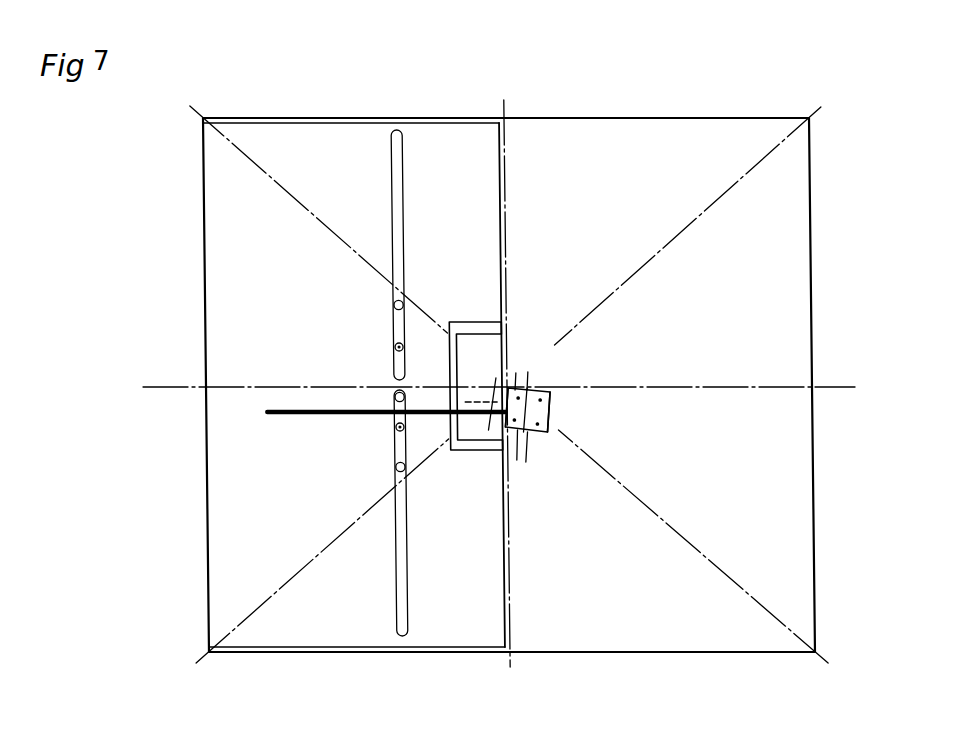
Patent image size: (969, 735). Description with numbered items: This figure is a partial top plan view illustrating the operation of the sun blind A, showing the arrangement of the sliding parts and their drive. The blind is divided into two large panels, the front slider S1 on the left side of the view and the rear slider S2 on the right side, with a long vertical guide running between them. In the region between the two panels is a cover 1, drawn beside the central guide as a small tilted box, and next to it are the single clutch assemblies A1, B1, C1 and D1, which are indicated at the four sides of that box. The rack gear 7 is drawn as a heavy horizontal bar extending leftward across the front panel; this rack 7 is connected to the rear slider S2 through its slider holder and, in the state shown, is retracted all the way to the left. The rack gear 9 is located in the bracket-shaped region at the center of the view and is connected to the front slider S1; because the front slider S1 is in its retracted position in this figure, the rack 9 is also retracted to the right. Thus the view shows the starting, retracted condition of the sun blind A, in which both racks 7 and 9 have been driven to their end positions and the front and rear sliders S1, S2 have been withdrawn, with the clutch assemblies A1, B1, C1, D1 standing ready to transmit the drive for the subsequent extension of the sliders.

The cover 1 is at (538, 391).
The rack gear 7 is at (300, 416).
The rack gear 9 is at (475, 400).
The sun blind A is at (603, 644).
The front slider S1 is at (222, 340).
The rear slider S2 is at (800, 330).
The single clutch assembly A1 is at (504, 436).
The single clutch assembly B1 is at (513, 386).
The single clutch assembly C1 is at (552, 410).
The single clutch assembly D1 is at (537, 423).